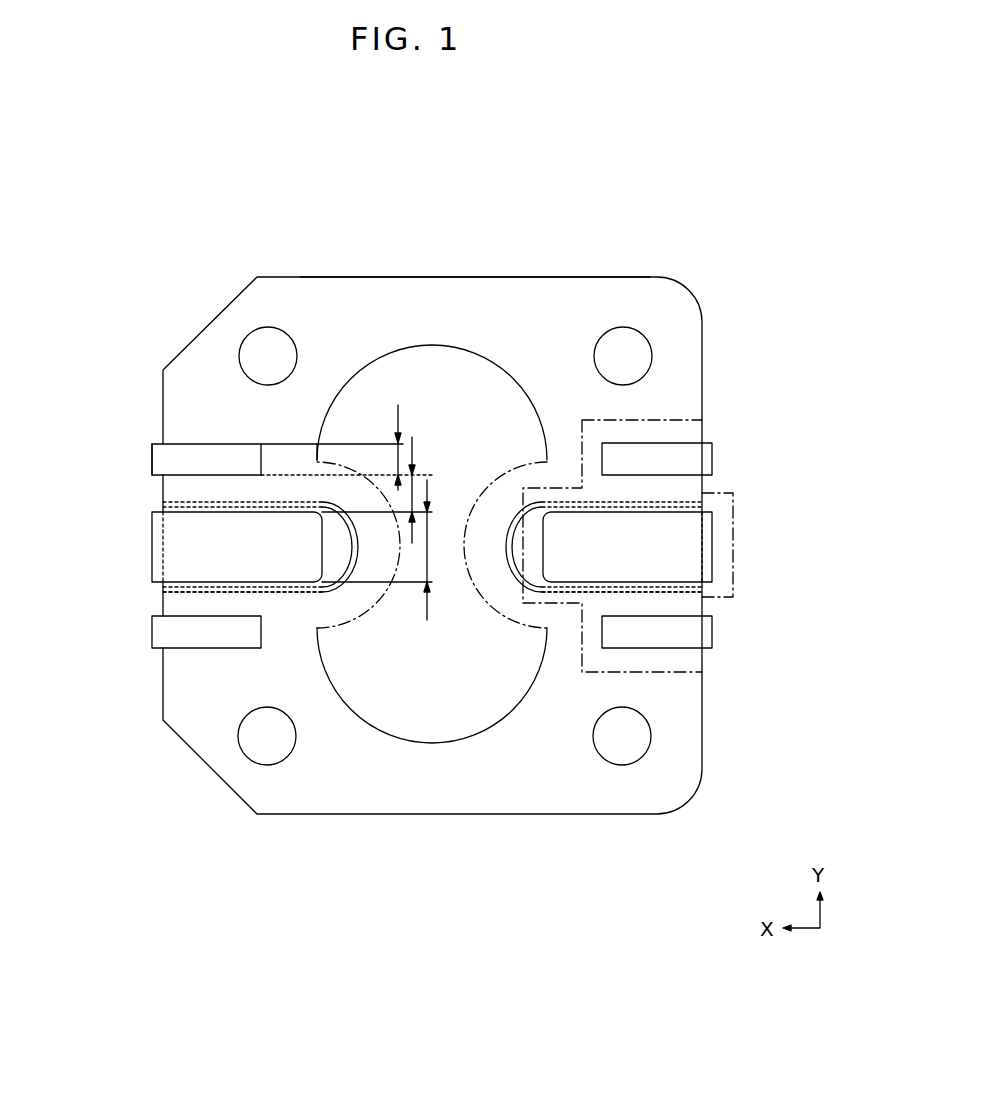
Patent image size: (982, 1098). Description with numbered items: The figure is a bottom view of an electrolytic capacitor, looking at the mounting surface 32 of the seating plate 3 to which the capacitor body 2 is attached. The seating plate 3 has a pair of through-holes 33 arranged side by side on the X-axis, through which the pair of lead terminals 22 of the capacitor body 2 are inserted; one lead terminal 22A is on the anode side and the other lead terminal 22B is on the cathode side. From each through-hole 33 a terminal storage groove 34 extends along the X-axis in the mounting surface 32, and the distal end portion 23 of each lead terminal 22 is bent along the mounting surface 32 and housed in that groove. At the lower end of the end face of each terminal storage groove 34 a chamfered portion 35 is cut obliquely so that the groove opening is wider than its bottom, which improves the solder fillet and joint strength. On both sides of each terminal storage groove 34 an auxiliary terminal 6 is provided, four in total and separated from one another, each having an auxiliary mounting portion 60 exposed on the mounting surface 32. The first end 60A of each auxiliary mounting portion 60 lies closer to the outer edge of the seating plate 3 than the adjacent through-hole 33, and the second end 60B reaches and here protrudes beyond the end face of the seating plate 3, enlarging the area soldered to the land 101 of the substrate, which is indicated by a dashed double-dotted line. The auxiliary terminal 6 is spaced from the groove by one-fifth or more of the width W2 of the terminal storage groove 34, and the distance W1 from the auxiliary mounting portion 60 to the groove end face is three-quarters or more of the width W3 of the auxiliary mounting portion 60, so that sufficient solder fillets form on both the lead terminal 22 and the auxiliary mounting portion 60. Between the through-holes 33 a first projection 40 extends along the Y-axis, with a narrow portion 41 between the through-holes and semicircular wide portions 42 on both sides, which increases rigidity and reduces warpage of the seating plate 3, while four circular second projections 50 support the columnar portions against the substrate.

The capacitor body 2 is at (442, 573).
The seating plate 3 is at (611, 815).
The auxiliary terminal 6 is at (432, 545).
The lead terminal 22 is at (442, 547).
The lead terminal on anode side 22A is at (157, 545).
The lead terminal on cathode side 22B is at (706, 545).
The distal end portion 23 is at (165, 563).
The mounting surface 32 is at (513, 284).
The through-hole 33 is at (343, 542).
The terminal storage groove 34 is at (190, 582).
The chamfered portion 35 is at (545, 590).
The first projection 40 is at (432, 551).
The narrow portion 41 is at (400, 552).
The wide portion 42 is at (465, 362).
The second projection 50 is at (289, 351).
The auxiliary mounting portion 60 is at (432, 521).
The first end 60A is at (263, 450).
The second end 60B is at (152, 455).
The land 101 is at (733, 597).
The distance W1 is at (413, 487).
The width of terminal storage groove W2 is at (398, 550).
The width of auxiliary mounting portion W3 is at (363, 447).